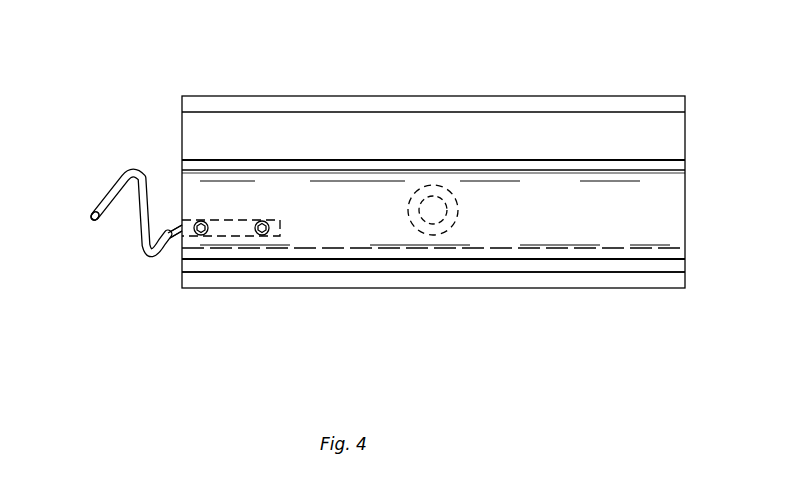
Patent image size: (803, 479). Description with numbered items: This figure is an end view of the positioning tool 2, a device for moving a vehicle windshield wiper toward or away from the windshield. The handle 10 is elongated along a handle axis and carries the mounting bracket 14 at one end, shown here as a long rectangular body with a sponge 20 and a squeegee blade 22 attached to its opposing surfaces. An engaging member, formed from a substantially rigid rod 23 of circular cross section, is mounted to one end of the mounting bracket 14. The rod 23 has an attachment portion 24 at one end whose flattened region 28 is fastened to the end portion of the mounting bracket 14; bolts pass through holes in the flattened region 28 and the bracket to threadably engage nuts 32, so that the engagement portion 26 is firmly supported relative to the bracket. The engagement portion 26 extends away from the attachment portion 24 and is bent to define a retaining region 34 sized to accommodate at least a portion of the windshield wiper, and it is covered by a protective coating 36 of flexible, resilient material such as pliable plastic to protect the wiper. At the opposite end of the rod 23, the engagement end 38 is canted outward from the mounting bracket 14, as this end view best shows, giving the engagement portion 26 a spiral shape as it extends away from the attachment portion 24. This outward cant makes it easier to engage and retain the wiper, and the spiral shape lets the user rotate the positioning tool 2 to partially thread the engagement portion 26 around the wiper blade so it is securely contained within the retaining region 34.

The positioning tool 2 is at (573, 52).
The handle 10 is at (431, 183).
The mounting bracket 14 is at (685, 213).
The sponge 20 is at (685, 125).
The squeegee blade 22 is at (685, 275).
The rod 23 is at (168, 236).
The attachment portion 24 is at (180, 226).
The engagement portion 26 is at (110, 180).
The flattened region 28 is at (230, 220).
The nuts 32 is at (205, 232).
The retaining region 34 is at (123, 213).
The protective coating 36 is at (157, 260).
The engagement end 38 is at (97, 203).